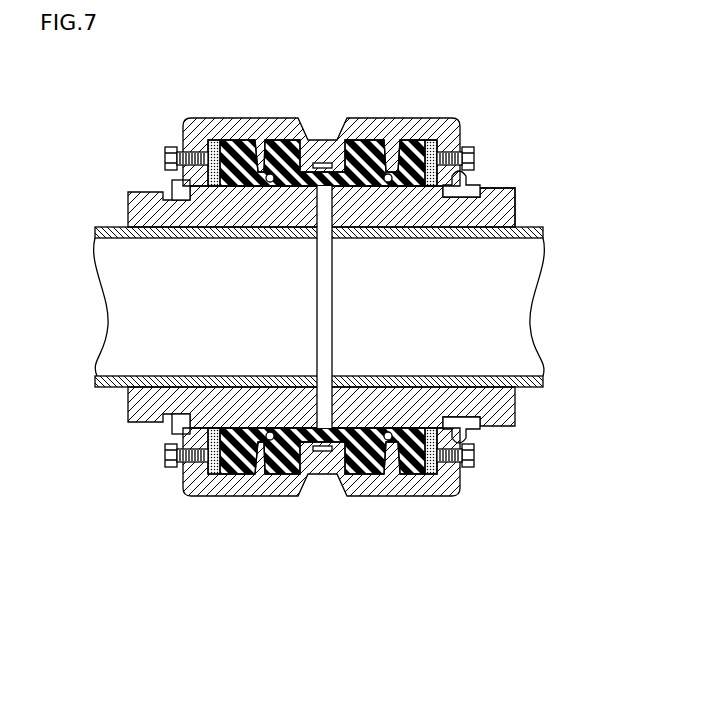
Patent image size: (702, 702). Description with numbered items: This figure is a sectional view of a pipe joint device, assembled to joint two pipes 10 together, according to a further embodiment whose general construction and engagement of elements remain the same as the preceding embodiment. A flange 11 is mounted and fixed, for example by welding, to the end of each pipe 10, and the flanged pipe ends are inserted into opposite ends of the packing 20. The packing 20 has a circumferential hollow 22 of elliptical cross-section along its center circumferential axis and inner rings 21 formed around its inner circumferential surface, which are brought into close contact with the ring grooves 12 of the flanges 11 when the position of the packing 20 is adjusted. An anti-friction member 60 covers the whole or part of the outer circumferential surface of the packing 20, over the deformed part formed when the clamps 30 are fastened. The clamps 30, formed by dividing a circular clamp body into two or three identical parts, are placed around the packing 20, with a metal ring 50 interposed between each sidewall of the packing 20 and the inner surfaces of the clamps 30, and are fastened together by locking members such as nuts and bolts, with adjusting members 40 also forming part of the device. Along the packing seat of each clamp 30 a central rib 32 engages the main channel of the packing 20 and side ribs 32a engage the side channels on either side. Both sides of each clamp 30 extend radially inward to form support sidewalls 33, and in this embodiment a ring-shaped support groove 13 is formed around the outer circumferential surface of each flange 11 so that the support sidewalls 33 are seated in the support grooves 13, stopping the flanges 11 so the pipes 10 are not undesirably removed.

The pipe 10 is at (319, 307).
The flange 11 is at (190, 213).
The ring groove 12 is at (172, 182).
The ring-shaped support groove 13 is at (486, 186).
The packing 20 is at (218, 473).
The inner ring 21 is at (428, 408).
The circumferential hollow 22 is at (393, 445).
The clamp 30 is at (360, 118).
The central rib 32 is at (322, 160).
The side rib 32a is at (253, 140).
The support sidewall 33 is at (468, 176).
The adjusting member 40 is at (474, 156).
The metal ring 50 is at (457, 132).
The anti-friction member 60 is at (228, 474).